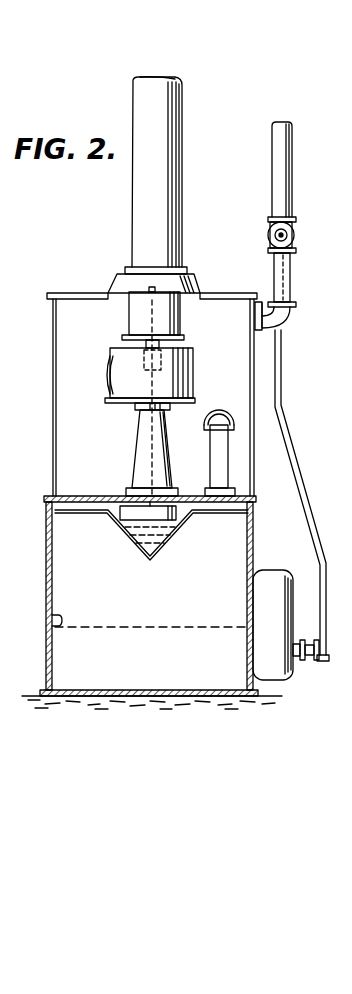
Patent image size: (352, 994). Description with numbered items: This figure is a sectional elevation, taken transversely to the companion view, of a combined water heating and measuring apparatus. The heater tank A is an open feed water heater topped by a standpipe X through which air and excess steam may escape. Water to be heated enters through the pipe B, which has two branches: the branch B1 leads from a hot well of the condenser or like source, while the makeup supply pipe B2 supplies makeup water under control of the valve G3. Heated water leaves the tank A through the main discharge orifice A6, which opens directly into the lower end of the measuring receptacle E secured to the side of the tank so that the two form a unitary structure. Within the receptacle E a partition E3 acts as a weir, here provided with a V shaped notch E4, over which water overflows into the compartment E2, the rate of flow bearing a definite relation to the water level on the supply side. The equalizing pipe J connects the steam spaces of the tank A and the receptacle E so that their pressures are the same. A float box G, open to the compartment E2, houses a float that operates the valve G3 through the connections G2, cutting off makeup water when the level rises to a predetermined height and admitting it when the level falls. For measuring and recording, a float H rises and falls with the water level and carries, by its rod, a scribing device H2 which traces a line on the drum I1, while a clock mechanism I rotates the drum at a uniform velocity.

The standpipe X is at (154, 185).
The heater tank A is at (53, 453).
The main discharge orifice A6 is at (52, 620).
The water supply pipe B is at (274, 264).
The hot well branch pipe B1 is at (272, 158).
The makeup supply pipe B2 is at (268, 232).
The makeup valve G3 is at (294, 232).
The float box G is at (286, 625).
The float valve connections G2 is at (281, 385).
The clock mechanism I is at (114, 373).
The record drum I1 is at (135, 318).
The float H is at (125, 524).
The scribing device H2 is at (158, 318).
The equalizing pipe J is at (212, 458).
The measuring receptacle E is at (253, 541).
The second compartment E2 is at (208, 688).
The weir partition E3 is at (150, 608).
The V shaped notch E4 is at (166, 540).